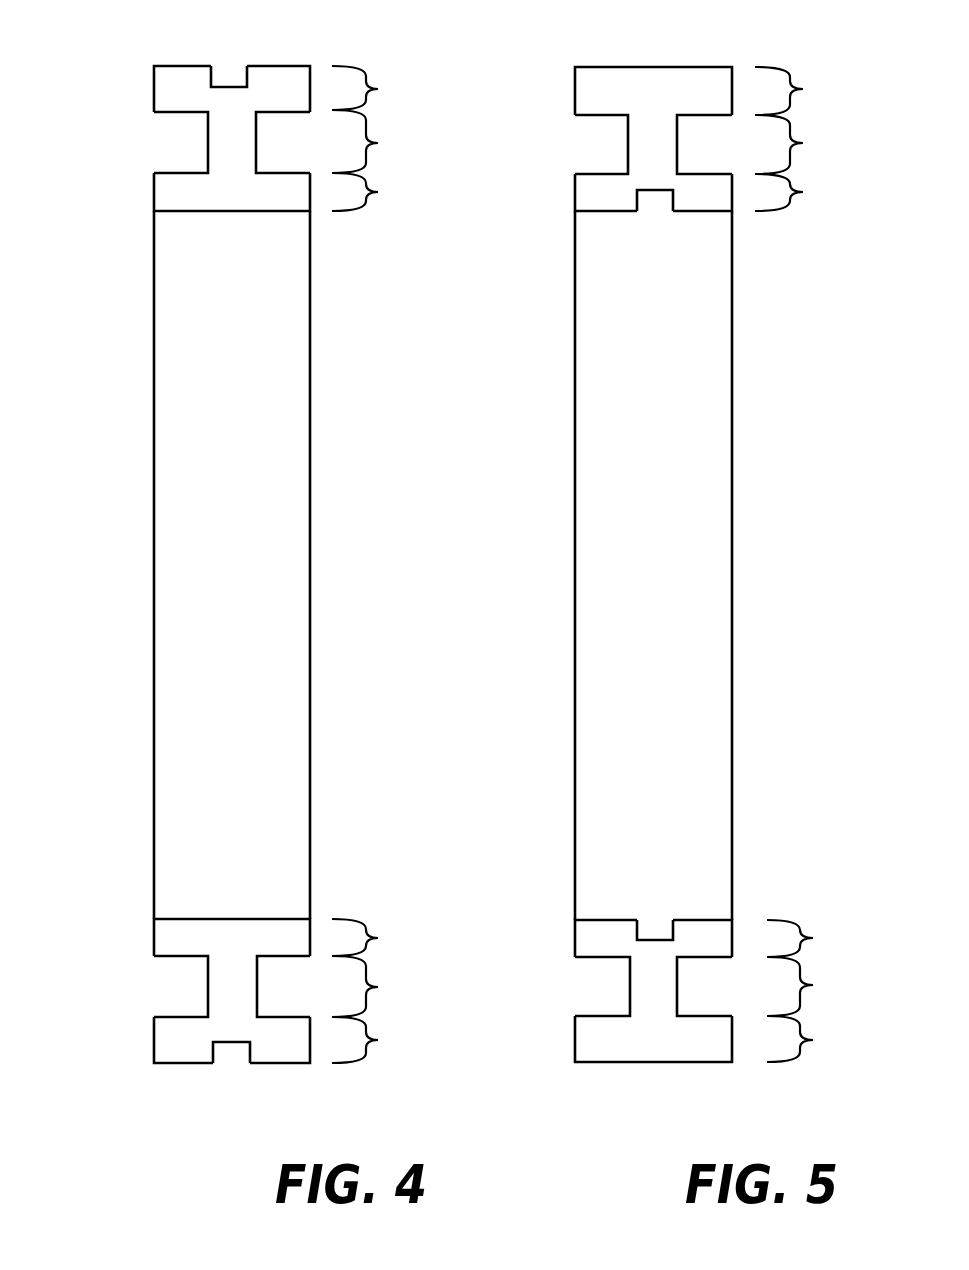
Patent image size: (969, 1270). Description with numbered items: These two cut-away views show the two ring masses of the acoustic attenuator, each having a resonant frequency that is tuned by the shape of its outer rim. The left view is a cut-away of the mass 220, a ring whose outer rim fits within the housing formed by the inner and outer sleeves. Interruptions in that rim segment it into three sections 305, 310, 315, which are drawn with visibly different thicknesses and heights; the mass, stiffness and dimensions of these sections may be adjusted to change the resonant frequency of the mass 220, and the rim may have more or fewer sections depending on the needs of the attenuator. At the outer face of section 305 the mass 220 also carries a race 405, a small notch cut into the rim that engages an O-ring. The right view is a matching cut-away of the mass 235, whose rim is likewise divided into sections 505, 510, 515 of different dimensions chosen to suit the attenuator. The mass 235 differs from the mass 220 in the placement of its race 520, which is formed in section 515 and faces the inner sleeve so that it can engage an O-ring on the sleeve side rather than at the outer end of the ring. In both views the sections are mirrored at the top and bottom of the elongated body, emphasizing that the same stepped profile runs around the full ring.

In FIG. 4, the mass 220 is at (138, 60).
In FIG. 5, the mass 235 is at (550, 50).
In FIG. 4, the section 305 is at (304, 564).
In FIG. 4, the section 310 is at (306, 563).
In FIG. 4, the section 315 is at (302, 564).
In FIG. 4, the race 405 is at (233, 62).
In FIG. 5, the section 505 is at (730, 564).
In FIG. 5, the section 510 is at (733, 565).
In FIG. 5, the section 515 is at (730, 565).
In FIG. 5, the race 520 is at (640, 218).